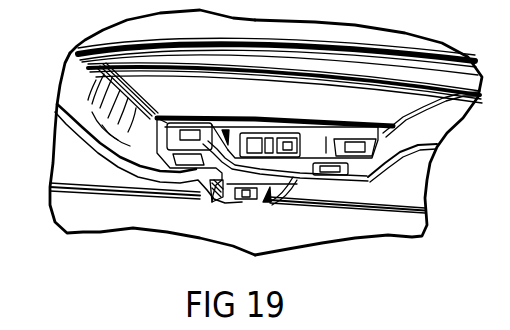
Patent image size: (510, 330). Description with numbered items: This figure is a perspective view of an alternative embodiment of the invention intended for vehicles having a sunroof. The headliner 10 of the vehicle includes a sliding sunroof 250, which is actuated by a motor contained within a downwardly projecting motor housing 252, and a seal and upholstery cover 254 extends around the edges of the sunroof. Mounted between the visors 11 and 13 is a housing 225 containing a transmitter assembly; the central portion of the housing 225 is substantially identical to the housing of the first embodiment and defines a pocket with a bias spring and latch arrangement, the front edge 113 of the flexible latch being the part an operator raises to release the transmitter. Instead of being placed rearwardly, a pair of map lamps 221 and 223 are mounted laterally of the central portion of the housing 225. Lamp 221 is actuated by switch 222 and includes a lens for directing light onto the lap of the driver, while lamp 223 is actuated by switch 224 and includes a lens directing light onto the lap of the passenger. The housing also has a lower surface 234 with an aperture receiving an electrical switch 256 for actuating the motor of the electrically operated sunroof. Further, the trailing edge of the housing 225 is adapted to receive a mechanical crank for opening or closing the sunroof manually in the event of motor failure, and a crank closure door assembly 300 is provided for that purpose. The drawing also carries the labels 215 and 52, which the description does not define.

The headliner 10 is at (433, 123).
The visor 11 is at (78, 185).
The visor 13 is at (402, 185).
The door 52 is at (498, 280).
The front edge 113 is at (276, 186).
The switch button 215 is at (310, 104).
The map lamp 221 is at (187, 158).
The switch 222 is at (190, 128).
The map lamp 223 is at (329, 177).
The switch 224 is at (358, 139).
The housing 225 is at (272, 230).
The lower surface 234 is at (212, 202).
The sliding sunroof 250 is at (382, 47).
The motor housing 252 is at (258, 110).
The seal and upholstery cover 254 is at (432, 80).
The electrical switch 256 is at (245, 200).
The crank closure door assembly 300 is at (228, 131).